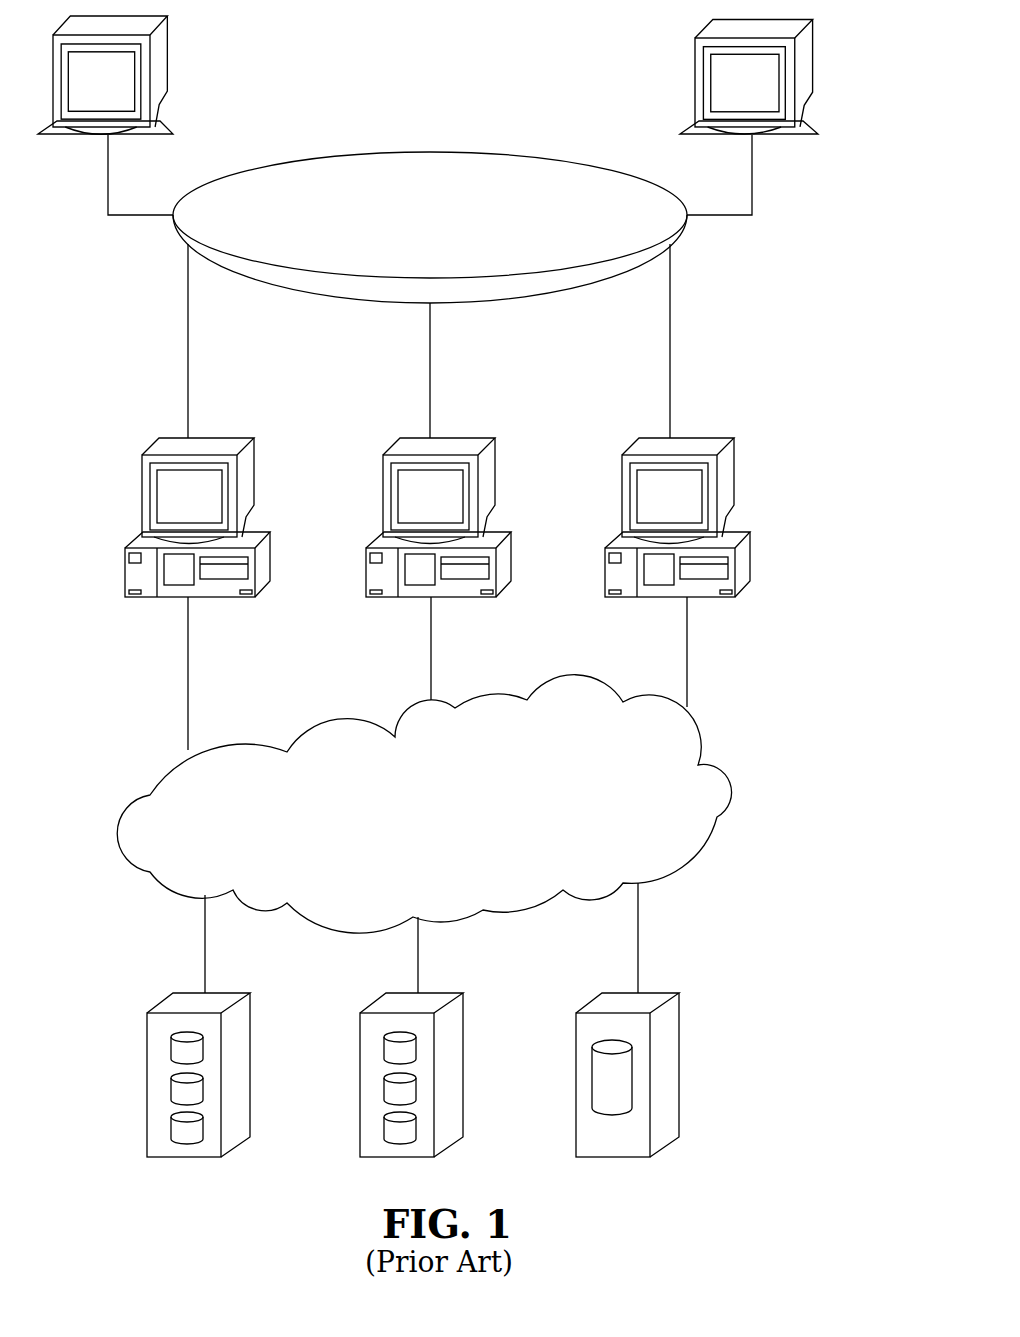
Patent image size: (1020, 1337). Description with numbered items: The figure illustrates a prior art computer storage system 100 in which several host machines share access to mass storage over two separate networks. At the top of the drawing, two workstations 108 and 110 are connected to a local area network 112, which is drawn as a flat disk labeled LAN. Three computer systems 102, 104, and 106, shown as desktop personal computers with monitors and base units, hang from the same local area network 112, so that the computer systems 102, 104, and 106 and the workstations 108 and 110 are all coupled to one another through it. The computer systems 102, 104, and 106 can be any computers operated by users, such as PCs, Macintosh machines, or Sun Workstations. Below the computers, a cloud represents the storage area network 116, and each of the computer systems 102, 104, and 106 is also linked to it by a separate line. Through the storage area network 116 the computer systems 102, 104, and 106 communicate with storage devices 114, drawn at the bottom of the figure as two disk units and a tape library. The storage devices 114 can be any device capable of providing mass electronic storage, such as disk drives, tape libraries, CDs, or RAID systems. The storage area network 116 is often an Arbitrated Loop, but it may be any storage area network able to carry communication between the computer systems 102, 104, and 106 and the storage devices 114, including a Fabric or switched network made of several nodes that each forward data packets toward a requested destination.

The computer storage system 100 is at (466, 13).
The computer system 102 is at (223, 435).
The computer system 104 is at (480, 435).
The computer system 106 is at (710, 435).
The workstation 108 is at (170, 73).
The workstation 110 is at (692, 79).
The local area network 112 is at (453, 247).
The storage devices 114 is at (145, 1042).
The storage area network 116 is at (440, 902).